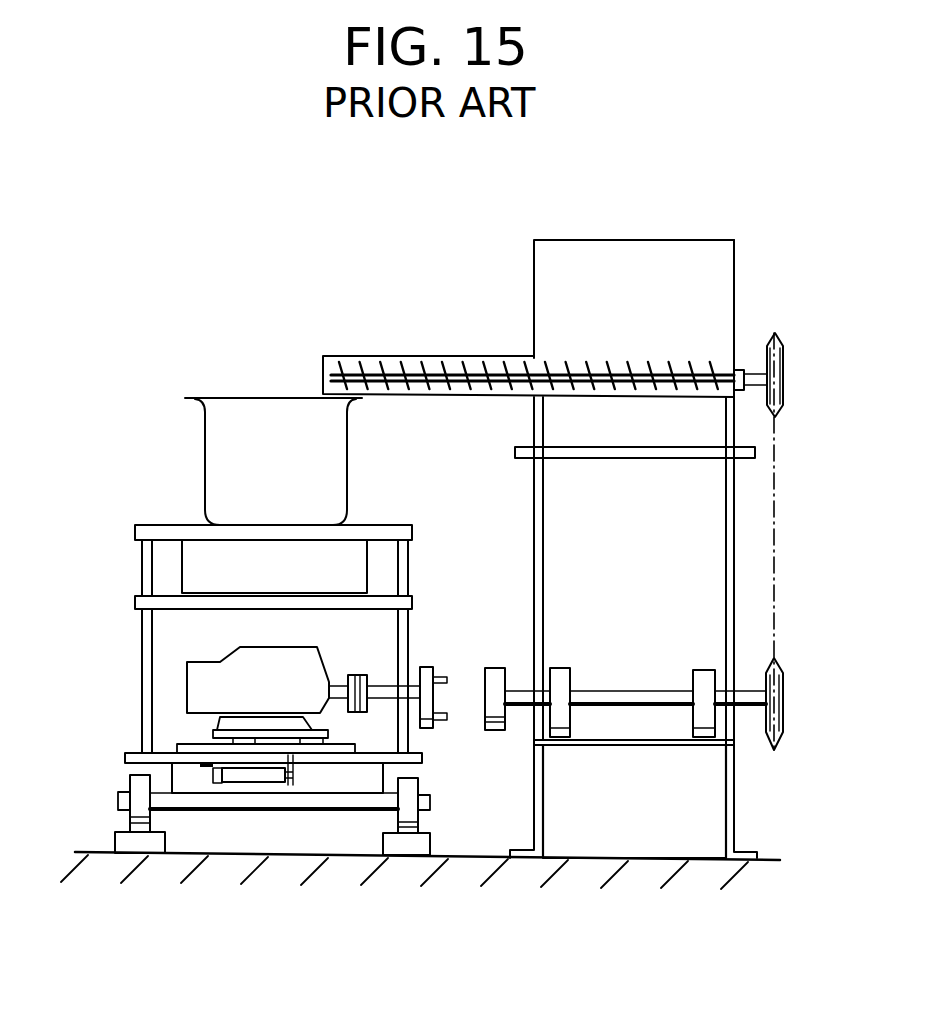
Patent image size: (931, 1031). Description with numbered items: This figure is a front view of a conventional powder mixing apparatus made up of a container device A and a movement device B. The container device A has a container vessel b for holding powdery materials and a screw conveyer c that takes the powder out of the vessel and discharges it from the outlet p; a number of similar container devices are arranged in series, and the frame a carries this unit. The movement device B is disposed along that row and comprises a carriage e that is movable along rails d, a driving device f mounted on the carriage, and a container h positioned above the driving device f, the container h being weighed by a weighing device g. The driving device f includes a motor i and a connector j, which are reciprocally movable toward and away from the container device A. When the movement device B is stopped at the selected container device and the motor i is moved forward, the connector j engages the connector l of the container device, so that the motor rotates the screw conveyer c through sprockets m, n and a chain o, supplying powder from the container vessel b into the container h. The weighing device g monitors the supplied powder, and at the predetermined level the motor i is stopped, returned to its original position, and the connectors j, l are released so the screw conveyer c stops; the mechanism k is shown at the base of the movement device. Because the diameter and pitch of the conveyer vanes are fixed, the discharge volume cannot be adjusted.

The container device A is at (664, 220).
The movement device B is at (138, 424).
The base frame a is at (731, 787).
The container vessel b is at (590, 240).
The screw conveyer c is at (502, 362).
The rails d is at (126, 840).
The carriage e is at (140, 672).
The driving device f is at (366, 648).
The weighing device g is at (285, 578).
The container h is at (286, 467).
The motor i is at (281, 701).
The connector j is at (433, 670).
The clutch k is at (270, 777).
The connector l is at (491, 731).
The sprocket m is at (783, 693).
The sprocket n is at (783, 380).
The chain o is at (777, 584).
The outlet p is at (323, 372).